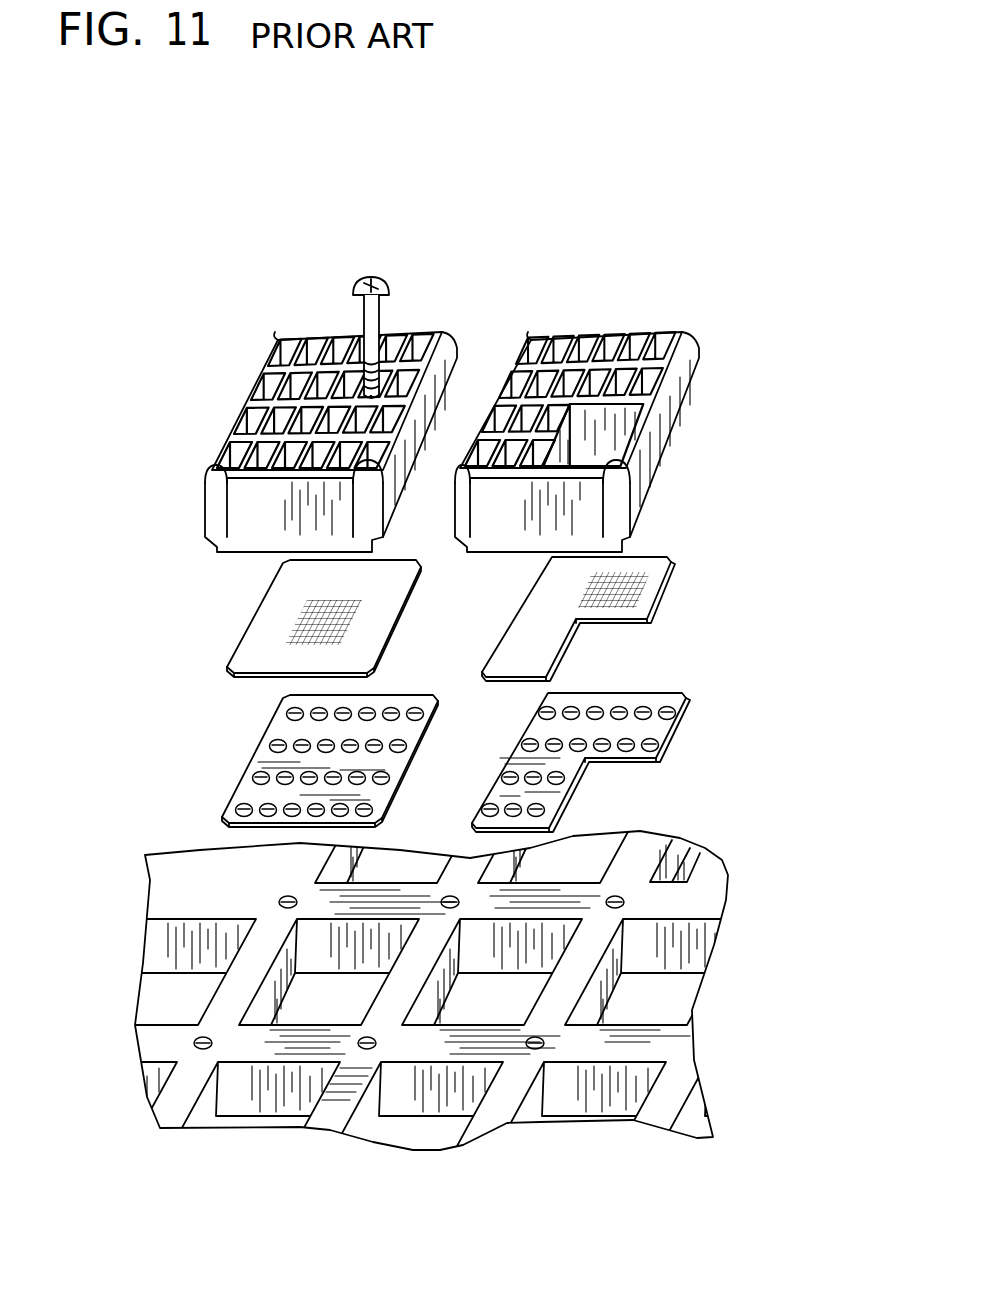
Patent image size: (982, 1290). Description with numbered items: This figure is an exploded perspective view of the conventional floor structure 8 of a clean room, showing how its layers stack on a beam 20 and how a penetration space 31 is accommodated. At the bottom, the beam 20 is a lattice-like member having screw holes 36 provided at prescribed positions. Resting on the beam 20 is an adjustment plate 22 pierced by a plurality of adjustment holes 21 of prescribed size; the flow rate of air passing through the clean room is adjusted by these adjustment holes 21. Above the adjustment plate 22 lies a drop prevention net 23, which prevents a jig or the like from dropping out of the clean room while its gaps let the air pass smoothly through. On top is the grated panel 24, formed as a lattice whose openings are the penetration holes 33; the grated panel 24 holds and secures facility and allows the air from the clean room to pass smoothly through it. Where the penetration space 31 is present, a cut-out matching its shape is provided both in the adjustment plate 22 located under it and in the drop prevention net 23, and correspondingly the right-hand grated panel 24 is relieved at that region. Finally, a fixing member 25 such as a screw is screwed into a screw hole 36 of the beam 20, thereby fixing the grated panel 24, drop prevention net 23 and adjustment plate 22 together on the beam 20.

The floor structure 8 is at (271, 257).
The beam 20 is at (683, 898).
The adjustment holes 21 is at (283, 713).
The adjustment plate 22 is at (240, 787).
The drop prevention net 23 is at (253, 612).
The grated panel 24 is at (242, 410).
The fixing member 25 is at (376, 284).
The penetration space 31 is at (610, 440).
The penetration holes 33 is at (583, 345).
The screw holes 36 is at (207, 1043).